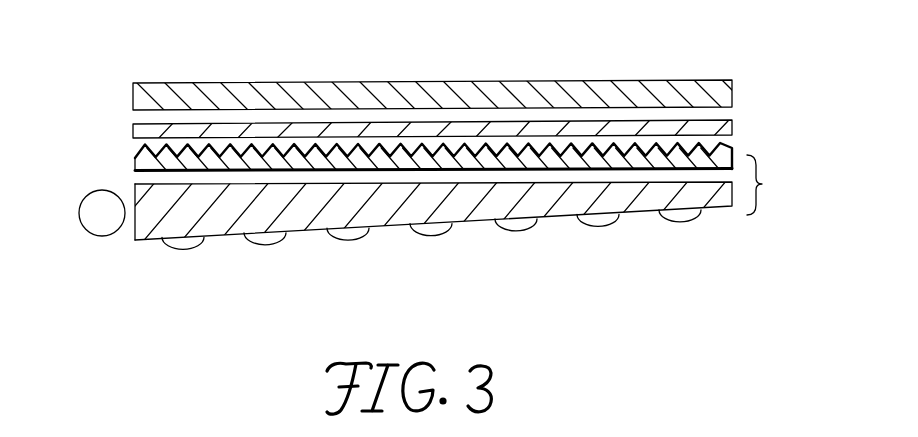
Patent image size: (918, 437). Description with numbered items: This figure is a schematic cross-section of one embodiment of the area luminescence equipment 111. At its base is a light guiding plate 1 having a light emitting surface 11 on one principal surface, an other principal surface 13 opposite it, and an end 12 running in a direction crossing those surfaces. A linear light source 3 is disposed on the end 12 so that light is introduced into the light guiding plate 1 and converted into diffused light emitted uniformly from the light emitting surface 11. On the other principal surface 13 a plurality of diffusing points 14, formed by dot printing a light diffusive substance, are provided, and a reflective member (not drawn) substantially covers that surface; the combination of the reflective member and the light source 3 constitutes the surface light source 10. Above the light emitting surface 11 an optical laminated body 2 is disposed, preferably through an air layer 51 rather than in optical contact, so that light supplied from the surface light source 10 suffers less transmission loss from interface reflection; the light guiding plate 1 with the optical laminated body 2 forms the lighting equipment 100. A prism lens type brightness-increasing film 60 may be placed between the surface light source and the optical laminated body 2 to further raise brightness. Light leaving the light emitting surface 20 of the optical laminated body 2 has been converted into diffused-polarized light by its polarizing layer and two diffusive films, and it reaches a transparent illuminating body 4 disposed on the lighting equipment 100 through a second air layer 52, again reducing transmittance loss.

The light guiding plate 1 is at (414, 246).
The optical laminated body 2 is at (640, 130).
The linear light source 3 is at (88, 223).
The transparent illuminating body 4 is at (587, 80).
The surface light source 10 is at (308, 278).
The light emitting surface 11 is at (402, 178).
The end 12 is at (133, 235).
The other principal surface 13 is at (252, 240).
The diffusing points 14 is at (683, 220).
The light emitting surface 20 is at (482, 124).
The air layer 51 is at (683, 178).
The air layer 52 is at (450, 151).
The prism lens type brightness-increasing film 60 is at (396, 98).
The lighting equipment 100 is at (783, 185).
The area luminescence equipment 111 is at (378, 68).